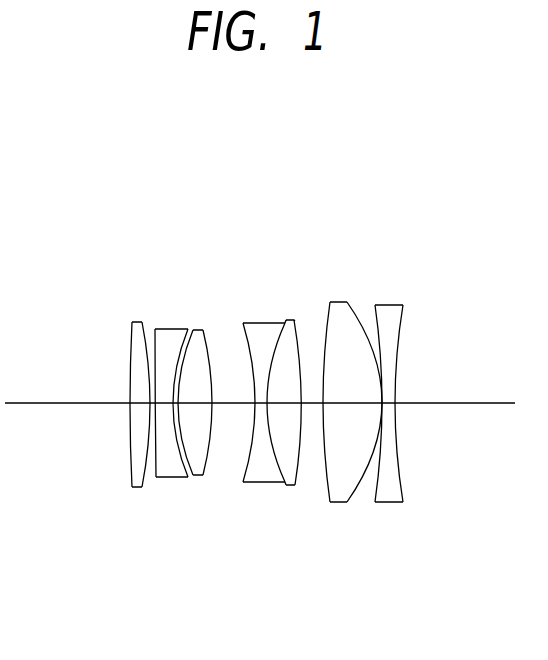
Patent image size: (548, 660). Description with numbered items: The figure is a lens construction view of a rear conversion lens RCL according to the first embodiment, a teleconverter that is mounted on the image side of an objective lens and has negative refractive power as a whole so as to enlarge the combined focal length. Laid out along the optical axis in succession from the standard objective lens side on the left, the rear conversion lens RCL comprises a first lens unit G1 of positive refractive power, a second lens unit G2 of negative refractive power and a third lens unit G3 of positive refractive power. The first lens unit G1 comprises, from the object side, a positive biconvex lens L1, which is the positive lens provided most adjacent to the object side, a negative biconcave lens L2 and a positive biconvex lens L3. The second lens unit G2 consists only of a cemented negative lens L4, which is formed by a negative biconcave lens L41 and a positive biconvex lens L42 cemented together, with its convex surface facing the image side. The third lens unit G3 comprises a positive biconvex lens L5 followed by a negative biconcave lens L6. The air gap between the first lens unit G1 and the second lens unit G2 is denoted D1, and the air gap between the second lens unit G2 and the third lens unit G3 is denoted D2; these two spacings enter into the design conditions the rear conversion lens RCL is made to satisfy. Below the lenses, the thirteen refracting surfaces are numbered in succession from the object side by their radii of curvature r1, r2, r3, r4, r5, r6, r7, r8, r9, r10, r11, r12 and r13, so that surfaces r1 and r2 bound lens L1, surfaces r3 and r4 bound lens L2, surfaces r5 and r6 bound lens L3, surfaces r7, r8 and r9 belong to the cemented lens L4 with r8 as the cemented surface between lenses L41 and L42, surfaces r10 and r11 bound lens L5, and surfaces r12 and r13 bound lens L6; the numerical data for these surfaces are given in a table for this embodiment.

The rear conversion lens RCL is at (418, 158).
The first lens unit G1 is at (213, 206).
The second lens unit G2 is at (263, 210).
The third lens unit G3 is at (437, 208).
The positive biconvex lens L1 is at (133, 326).
The negative biconcave lens L2 is at (170, 329).
The positive biconvex lens L3 is at (200, 330).
The cemented negative lens L4 is at (313, 265).
The negative biconcave lens L41 is at (258, 332).
The positive biconvex lens L42 is at (292, 321).
The positive biconvex lens L5 is at (345, 305).
The negative biconcave lens L6 is at (390, 312).
The air gap between the first lens unit and the second lens unit D1 is at (230, 403).
The air gap between the second lens unit and the third lens unit D2 is at (312, 400).
The radius of curvature of the first surface r1 is at (131, 478).
The radius of curvature of the second surface r2 is at (143, 480).
The radius of curvature of the third surface r3 is at (156, 477).
The radius of curvature of the fourth surface r4 is at (175, 477).
The radius of curvature of the fifth surface r5 is at (184, 475).
The radius of curvature of the sixth surface r6 is at (207, 475).
The radius of curvature of the seventh surface r7 is at (248, 458).
The radius of curvature of the eighth surface r8 is at (277, 465).
The radius of curvature of the ninth surface r9 is at (296, 470).
The radius of curvature of the tenth surface r10 is at (327, 468).
The radius of curvature of the eleventh surface r11 is at (356, 493).
The radius of curvature of the twelfth surface r12 is at (377, 488).
The radius of curvature of the thirteenth surface r13 is at (403, 490).